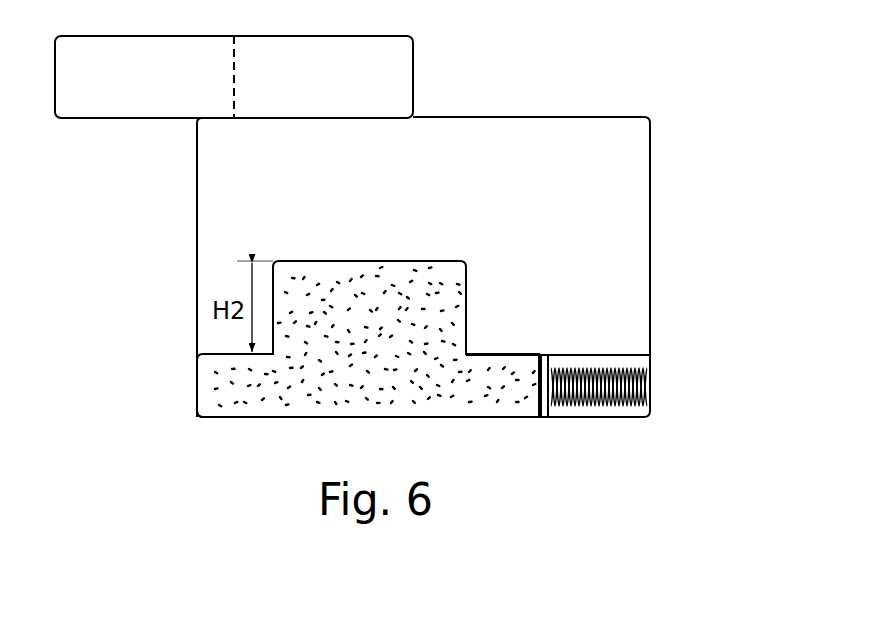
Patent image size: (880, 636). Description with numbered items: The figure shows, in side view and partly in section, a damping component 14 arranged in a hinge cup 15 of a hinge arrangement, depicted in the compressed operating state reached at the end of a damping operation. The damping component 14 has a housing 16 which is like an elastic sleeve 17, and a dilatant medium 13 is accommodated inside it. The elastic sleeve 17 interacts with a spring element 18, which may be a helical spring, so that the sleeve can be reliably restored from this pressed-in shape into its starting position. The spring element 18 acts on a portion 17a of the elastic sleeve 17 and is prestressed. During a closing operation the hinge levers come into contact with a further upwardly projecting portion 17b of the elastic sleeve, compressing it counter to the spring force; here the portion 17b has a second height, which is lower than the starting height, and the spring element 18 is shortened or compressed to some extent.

The dilatant medium 13 is at (305, 278).
The damping component 14 is at (488, 261).
The hinge cup 15 is at (656, 242).
The housing 16 is at (473, 310).
The elastic sleeve 17 is at (349, 247).
The portion of the elastic sleeve 17a is at (536, 398).
The upwardly projecting portion of the elastic sleeve 17b is at (428, 258).
The spring element 18 is at (597, 398).